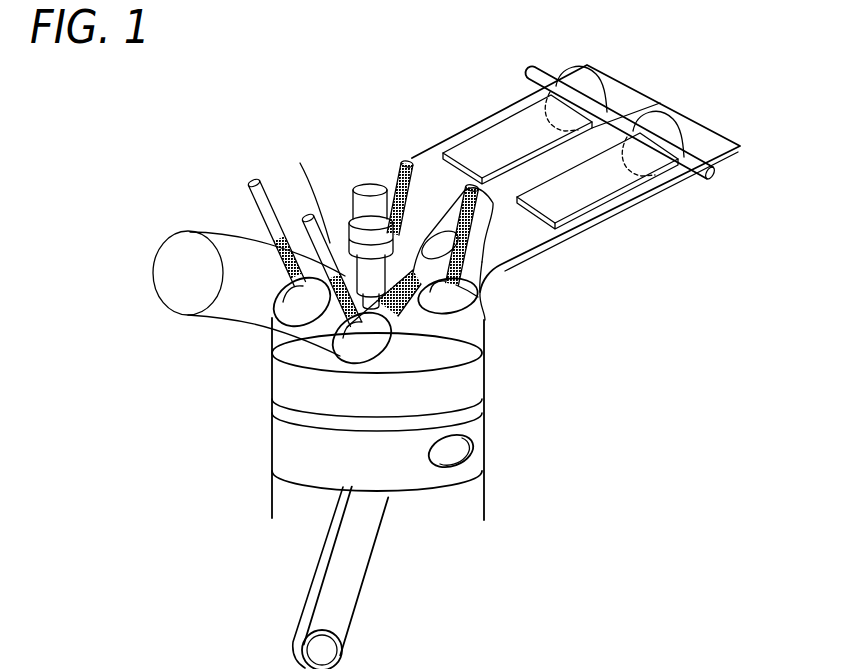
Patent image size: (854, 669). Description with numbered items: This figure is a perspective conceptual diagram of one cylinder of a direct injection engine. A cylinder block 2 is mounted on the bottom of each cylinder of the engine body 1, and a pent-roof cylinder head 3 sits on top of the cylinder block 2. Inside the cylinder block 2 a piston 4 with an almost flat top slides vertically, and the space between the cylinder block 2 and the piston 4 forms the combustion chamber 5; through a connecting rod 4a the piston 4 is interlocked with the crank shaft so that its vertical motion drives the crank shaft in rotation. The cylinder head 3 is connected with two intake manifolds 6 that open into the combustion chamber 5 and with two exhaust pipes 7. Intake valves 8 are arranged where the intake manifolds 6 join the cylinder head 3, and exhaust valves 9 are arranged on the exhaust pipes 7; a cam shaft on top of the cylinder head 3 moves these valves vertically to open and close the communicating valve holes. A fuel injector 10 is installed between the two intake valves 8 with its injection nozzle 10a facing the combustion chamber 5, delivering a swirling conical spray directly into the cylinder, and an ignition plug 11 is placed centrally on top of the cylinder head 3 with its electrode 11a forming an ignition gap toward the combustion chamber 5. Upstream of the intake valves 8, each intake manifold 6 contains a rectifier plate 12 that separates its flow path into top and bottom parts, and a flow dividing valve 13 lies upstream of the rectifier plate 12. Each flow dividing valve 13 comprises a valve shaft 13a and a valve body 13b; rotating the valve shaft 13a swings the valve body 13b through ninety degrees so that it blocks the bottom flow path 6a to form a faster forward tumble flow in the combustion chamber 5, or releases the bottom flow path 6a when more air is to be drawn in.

The engine body 1 is at (222, 125).
The cylinder block 2 is at (486, 472).
The cylinder head 3 is at (470, 328).
The piston 4 is at (288, 456).
The connecting rod 4a is at (350, 610).
The combustion chamber 5 is at (478, 352).
The intake manifold 6 is at (600, 88).
The bottom flow path 6a is at (443, 180).
The exhaust pipe 7 is at (162, 296).
The intake valve 8 is at (406, 160).
The exhaust valve 9 is at (282, 203).
The fuel injector 10 is at (485, 232).
The injection nozzle 10a is at (465, 190).
The ignition plug 11 is at (368, 194).
The electrode 11a is at (470, 298).
The rectifier plate 12 is at (485, 145).
The flow dividing valve 13 is at (610, 100).
The valve shaft 13a is at (712, 178).
The valve body 13b is at (578, 90).